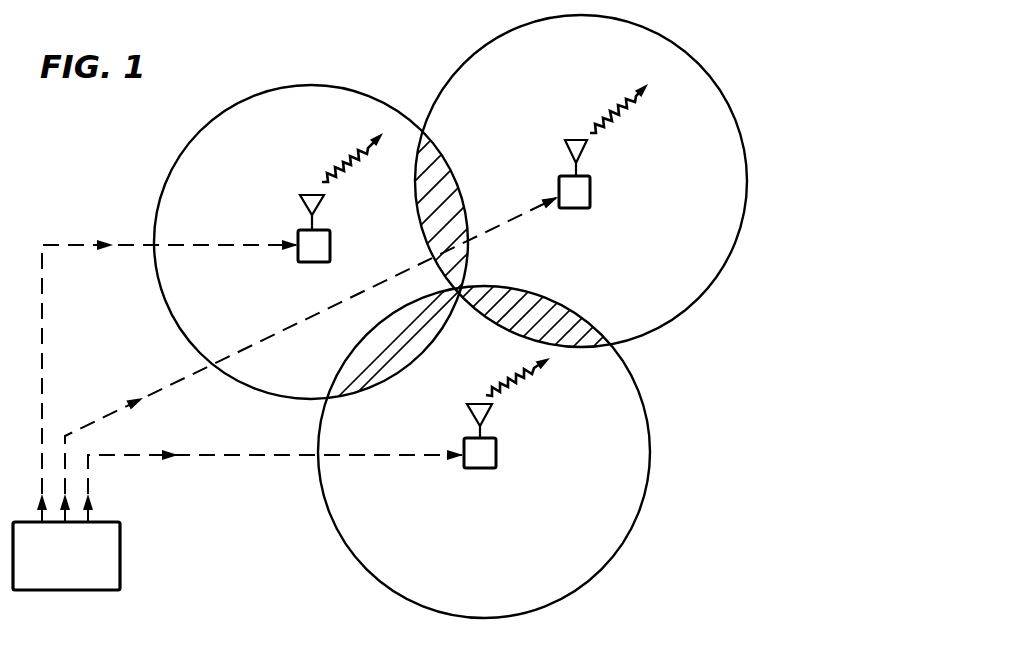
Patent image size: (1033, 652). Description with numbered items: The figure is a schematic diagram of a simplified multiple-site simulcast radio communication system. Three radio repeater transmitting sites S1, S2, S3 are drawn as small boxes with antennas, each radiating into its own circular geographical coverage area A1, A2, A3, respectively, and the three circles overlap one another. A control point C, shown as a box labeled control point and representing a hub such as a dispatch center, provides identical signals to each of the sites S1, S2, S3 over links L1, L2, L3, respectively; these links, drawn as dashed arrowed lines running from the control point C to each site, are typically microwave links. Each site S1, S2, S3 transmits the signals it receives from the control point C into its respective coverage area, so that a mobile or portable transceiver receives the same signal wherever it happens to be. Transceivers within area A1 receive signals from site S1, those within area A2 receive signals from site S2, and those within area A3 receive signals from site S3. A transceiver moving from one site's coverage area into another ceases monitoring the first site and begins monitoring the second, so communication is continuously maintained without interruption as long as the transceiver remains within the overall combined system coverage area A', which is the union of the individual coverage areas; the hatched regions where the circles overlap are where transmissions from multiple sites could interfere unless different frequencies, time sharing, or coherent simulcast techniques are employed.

The coverage area A1 is at (307, 85).
The coverage area A2 is at (680, 47).
The coverage area A3 is at (364, 558).
The overall combined system coverage area A' is at (503, 300).
The radio repeater site S1 is at (303, 264).
The radio repeater site S2 is at (566, 210).
The radio repeater site S3 is at (481, 470).
The link L1 is at (88, 243).
The link L2 is at (174, 385).
The link L3 is at (246, 455).
The control point C is at (120, 556).